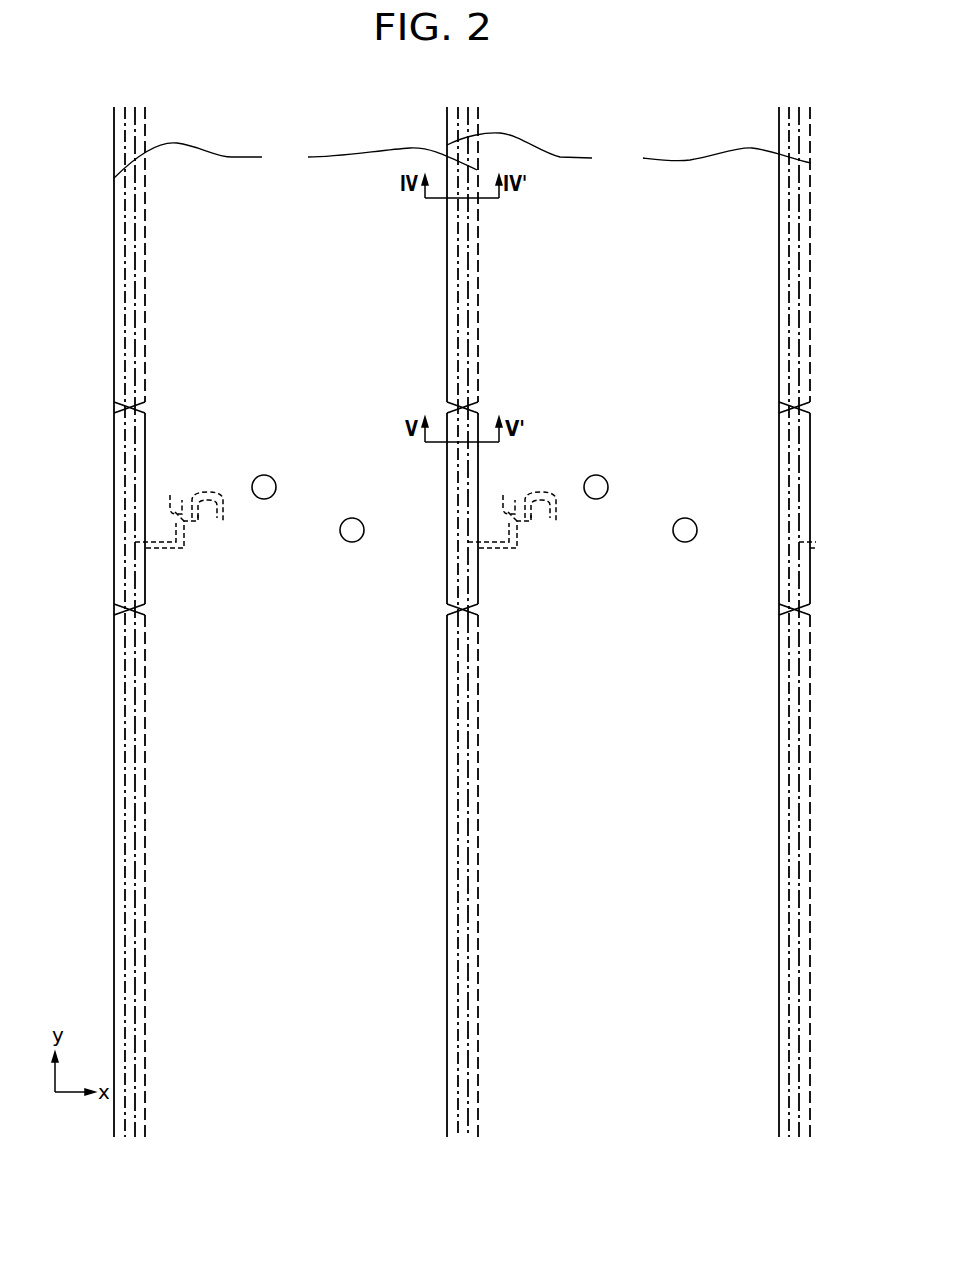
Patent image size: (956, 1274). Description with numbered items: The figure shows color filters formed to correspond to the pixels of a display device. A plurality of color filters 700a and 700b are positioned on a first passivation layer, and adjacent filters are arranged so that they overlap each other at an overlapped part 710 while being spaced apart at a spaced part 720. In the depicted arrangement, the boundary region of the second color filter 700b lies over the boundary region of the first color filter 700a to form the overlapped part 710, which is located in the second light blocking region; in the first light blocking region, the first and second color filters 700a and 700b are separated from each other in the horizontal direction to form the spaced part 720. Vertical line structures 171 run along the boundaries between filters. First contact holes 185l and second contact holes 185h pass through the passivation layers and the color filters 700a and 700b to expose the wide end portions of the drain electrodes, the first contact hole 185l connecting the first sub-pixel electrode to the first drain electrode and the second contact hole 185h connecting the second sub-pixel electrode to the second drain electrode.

The data line 171 is at (465, 619).
The first color filter 700a is at (295, 160).
The second color filter 700b is at (629, 151).
The overlapped part 710 is at (448, 274).
The spaced part 720 is at (447, 476).
The second contact hole 185h is at (265, 474).
The first contact hole 185l is at (352, 518).